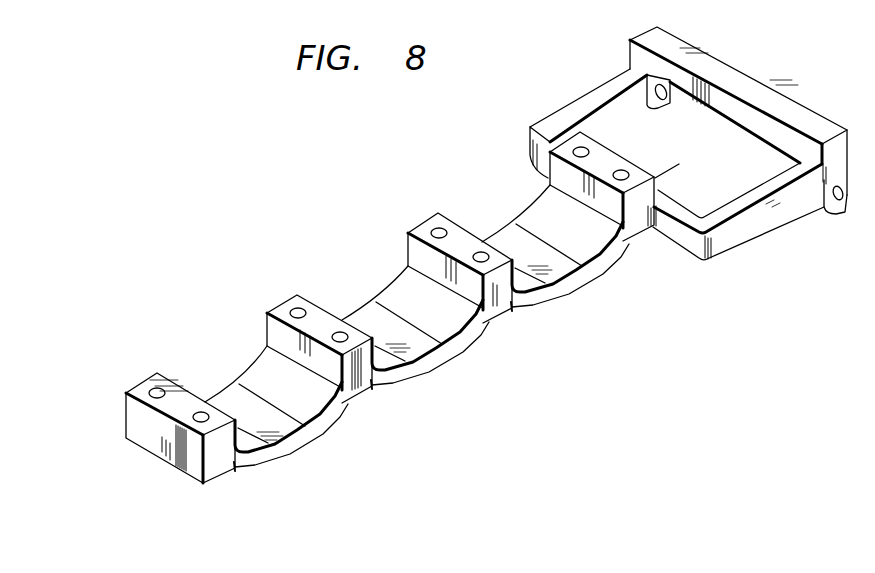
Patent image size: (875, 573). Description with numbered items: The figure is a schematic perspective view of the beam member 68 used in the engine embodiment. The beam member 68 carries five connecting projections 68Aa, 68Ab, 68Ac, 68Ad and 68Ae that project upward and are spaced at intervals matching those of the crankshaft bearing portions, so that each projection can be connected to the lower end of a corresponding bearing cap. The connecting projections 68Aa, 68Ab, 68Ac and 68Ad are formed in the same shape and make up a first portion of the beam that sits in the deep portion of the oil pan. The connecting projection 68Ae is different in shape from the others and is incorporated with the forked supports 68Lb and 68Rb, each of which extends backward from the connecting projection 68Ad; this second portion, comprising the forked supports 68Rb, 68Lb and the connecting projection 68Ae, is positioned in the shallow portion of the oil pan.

The beam member 68 is at (488, 340).
The connecting projection 68Aa is at (137, 425).
The connecting projection 68Ab is at (277, 331).
The connecting projection 68Ac is at (422, 253).
The connecting projection 68Ad is at (560, 177).
The connecting projection 68Ae is at (740, 117).
The forked support 68Lb is at (617, 108).
The forked support 68Rb is at (778, 222).